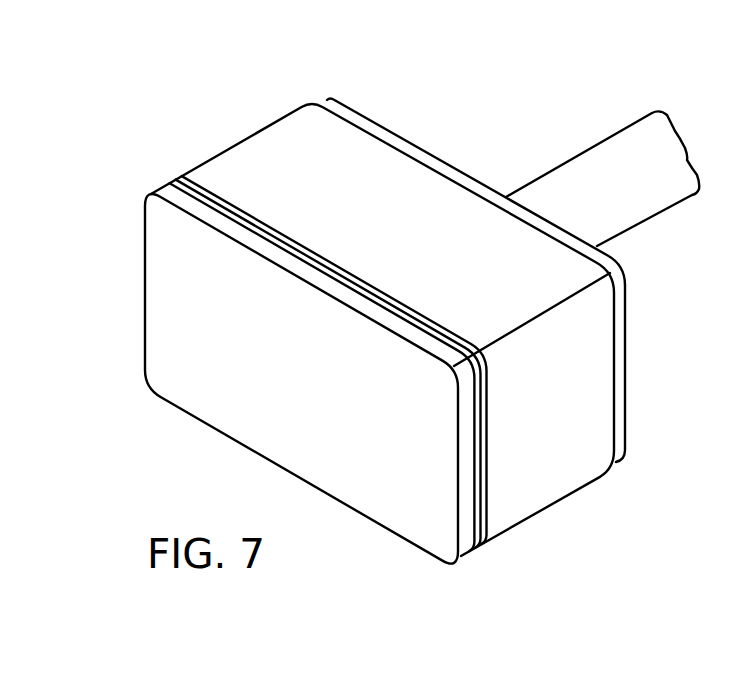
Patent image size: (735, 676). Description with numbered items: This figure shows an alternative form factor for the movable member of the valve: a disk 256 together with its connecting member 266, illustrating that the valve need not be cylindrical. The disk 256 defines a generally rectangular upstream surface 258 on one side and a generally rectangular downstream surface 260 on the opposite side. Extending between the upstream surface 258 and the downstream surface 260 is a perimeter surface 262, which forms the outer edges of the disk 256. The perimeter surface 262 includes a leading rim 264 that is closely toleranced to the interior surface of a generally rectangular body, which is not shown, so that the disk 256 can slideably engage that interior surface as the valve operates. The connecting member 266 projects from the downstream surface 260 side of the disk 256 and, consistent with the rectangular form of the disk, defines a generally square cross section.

The disk 256 is at (203, 106).
The upstream surface 258 is at (327, 395).
The downstream surface 260 is at (470, 177).
The perimeter surface 262 is at (627, 460).
The leading rim 264 is at (466, 558).
The connecting member 266 is at (574, 154).